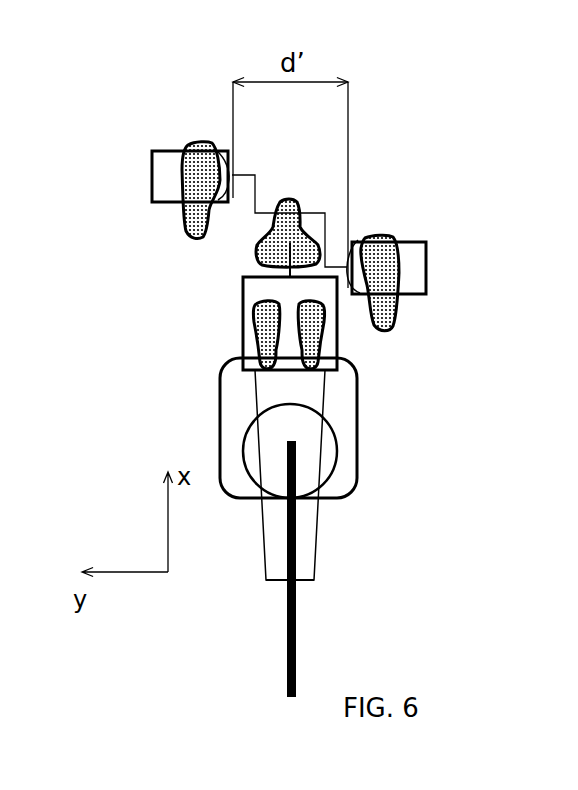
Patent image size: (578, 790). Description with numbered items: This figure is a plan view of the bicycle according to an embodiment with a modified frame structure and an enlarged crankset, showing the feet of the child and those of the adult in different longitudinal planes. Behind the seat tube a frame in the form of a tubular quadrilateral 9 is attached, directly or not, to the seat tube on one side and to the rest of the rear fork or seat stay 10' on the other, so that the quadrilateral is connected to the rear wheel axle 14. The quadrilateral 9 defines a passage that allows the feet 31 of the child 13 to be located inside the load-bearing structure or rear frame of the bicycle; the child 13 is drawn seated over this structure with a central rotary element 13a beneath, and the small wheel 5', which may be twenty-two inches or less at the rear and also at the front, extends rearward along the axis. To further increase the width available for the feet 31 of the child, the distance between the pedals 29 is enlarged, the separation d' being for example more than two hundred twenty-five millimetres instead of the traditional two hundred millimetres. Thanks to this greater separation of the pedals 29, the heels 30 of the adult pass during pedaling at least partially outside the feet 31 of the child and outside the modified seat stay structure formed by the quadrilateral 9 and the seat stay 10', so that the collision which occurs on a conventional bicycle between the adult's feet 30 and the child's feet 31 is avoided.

The pedals 29 is at (155, 138).
The heels of the adult 30 is at (390, 239).
The tubular quadrilateral 9 is at (234, 314).
The feet of the child 31 is at (323, 337).
The child 13 is at (370, 431).
The rotary bearing 13a is at (341, 472).
The seat stay 10' is at (215, 473).
The rear wheel axle 14 is at (266, 587).
The wheel 5' is at (363, 569).